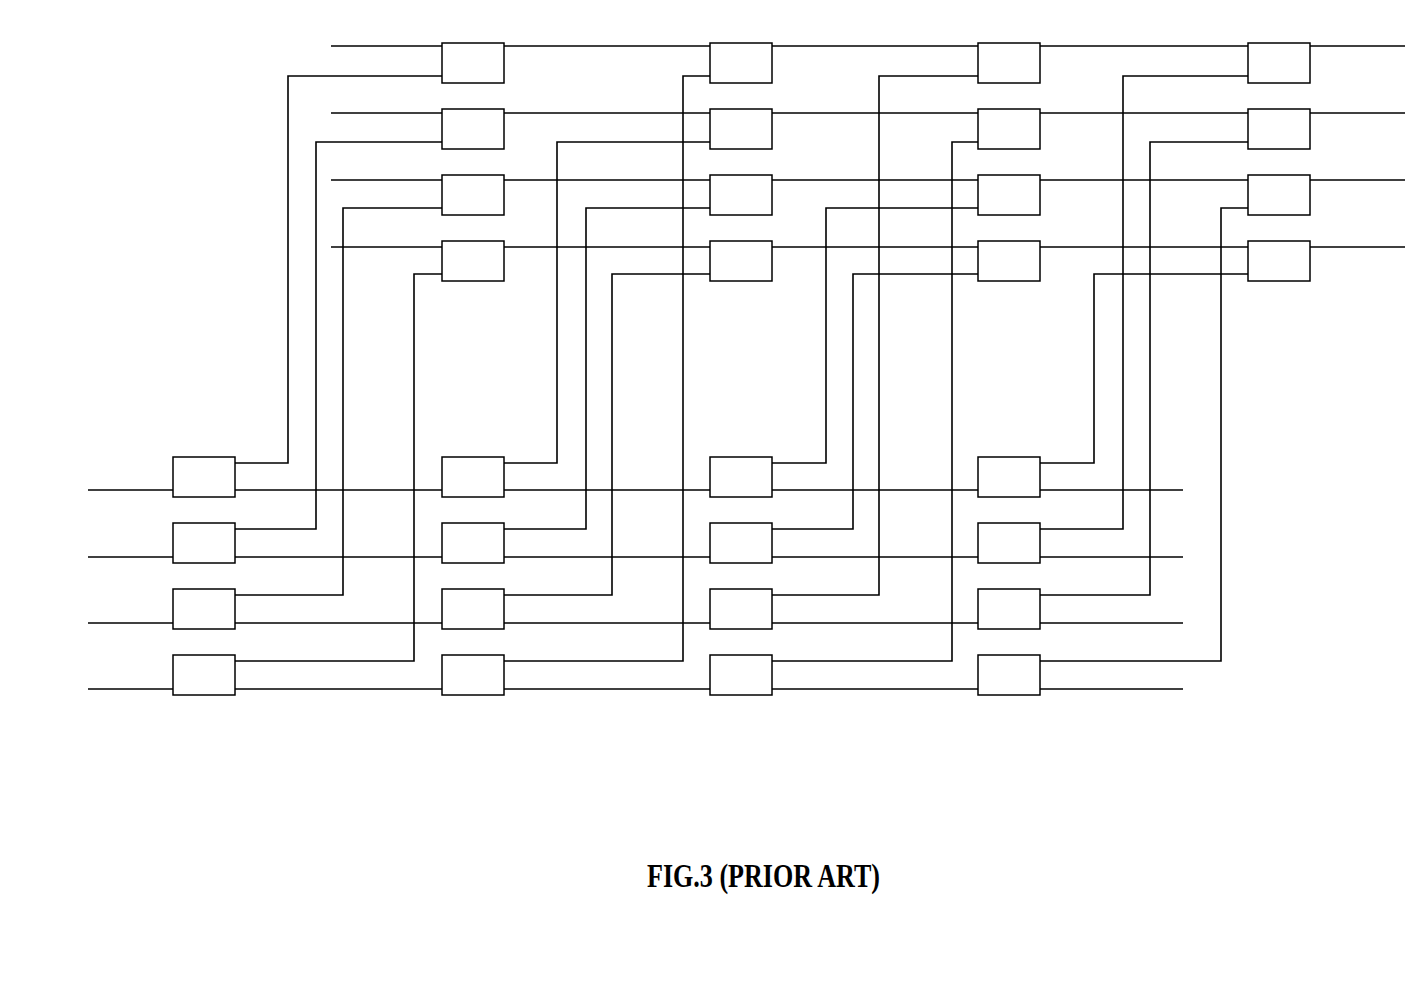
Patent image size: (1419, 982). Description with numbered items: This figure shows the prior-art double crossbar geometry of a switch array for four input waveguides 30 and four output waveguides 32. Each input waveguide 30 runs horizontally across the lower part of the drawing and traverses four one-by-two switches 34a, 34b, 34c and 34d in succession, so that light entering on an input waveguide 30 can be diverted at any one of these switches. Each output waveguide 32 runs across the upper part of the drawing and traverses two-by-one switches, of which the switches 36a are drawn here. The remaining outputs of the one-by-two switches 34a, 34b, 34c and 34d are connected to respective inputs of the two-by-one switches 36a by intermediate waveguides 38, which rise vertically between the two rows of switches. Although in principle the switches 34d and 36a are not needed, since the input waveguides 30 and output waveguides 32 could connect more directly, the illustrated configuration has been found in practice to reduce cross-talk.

The input waveguides 30 is at (163, 490).
The output waveguides 32 is at (1390, 47).
The 1×2 switch 34a is at (186, 488).
The 1×2 switch 34b is at (455, 488).
The 1×2 switch 34c is at (723, 488).
The 1×2 switch 34d is at (991, 488).
The 2×1 switch 36a is at (455, 74).
The intermediate waveguides 38 is at (343, 376).